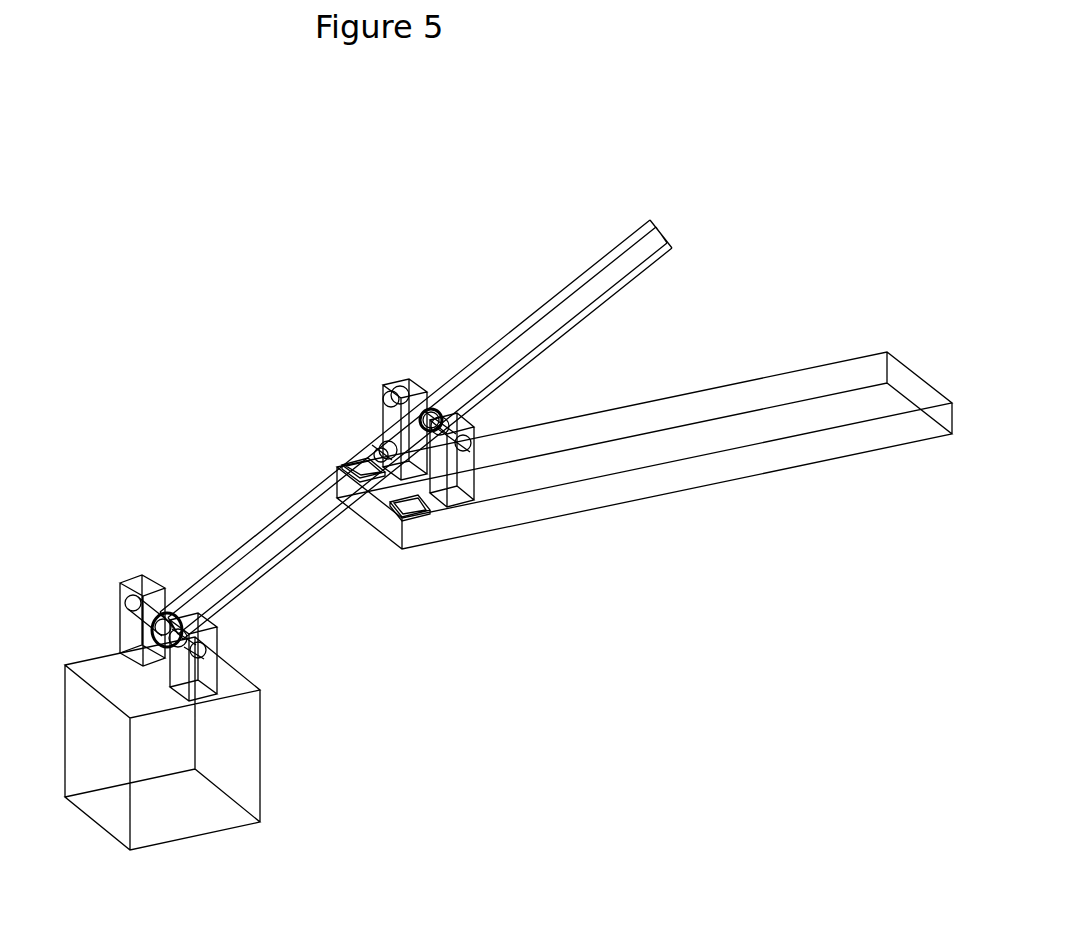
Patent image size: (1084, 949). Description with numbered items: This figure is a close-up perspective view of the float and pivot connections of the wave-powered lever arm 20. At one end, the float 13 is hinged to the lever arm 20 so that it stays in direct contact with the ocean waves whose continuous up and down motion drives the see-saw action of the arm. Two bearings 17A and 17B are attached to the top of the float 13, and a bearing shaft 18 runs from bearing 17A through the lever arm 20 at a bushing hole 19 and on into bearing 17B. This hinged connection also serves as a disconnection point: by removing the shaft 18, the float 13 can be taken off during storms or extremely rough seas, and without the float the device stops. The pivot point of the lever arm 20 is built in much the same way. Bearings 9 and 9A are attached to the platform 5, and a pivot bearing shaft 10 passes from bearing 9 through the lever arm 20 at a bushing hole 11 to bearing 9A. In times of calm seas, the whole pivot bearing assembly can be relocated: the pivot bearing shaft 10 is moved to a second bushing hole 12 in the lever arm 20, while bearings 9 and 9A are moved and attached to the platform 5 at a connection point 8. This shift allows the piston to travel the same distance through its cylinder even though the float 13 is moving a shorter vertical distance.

The platform 5 is at (678, 393).
The connection point 8 is at (400, 519).
The bearing 9 is at (413, 380).
The bearing 9A is at (450, 430).
The pivot bearing shaft 10 is at (418, 417).
The bushing hole 11 is at (420, 418).
The bushing hole 12 is at (379, 452).
The float 13 is at (260, 754).
The bearing 17A is at (155, 578).
The bearing 17B is at (216, 629).
The bearing shaft 18 is at (128, 611).
The bushing hole 19 is at (180, 614).
The lever arm 20 is at (600, 258).